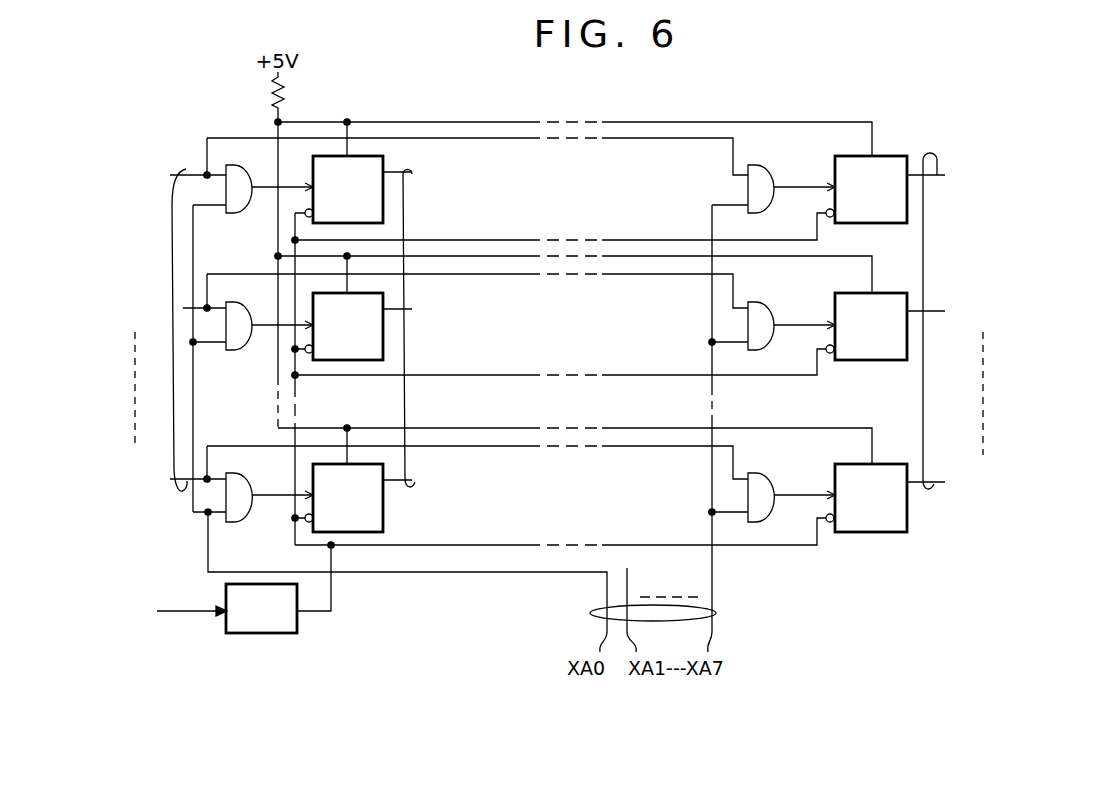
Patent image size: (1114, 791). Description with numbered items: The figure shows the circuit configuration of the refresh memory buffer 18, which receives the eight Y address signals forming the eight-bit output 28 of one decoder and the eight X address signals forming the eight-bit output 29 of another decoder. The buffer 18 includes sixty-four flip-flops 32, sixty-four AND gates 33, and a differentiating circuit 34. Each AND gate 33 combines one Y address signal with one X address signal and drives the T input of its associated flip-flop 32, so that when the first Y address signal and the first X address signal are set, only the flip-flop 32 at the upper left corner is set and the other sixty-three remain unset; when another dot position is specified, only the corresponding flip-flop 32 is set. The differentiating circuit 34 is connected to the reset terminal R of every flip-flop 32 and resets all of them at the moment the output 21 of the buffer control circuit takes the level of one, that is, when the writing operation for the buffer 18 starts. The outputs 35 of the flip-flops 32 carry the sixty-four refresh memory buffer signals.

The buffer 18 is at (1082, 86).
The output of the buffer control circuit 21 is at (180, 612).
The 8-bit output of the decoder 28 is at (181, 168).
The 8-bit output of the decoder 29 is at (716, 613).
The flip-flop 32 is at (896, 558).
The AND gate 33 is at (774, 538).
The differentiating circuit 34 is at (258, 634).
The outputs of the flip-flops 35 is at (952, 508).